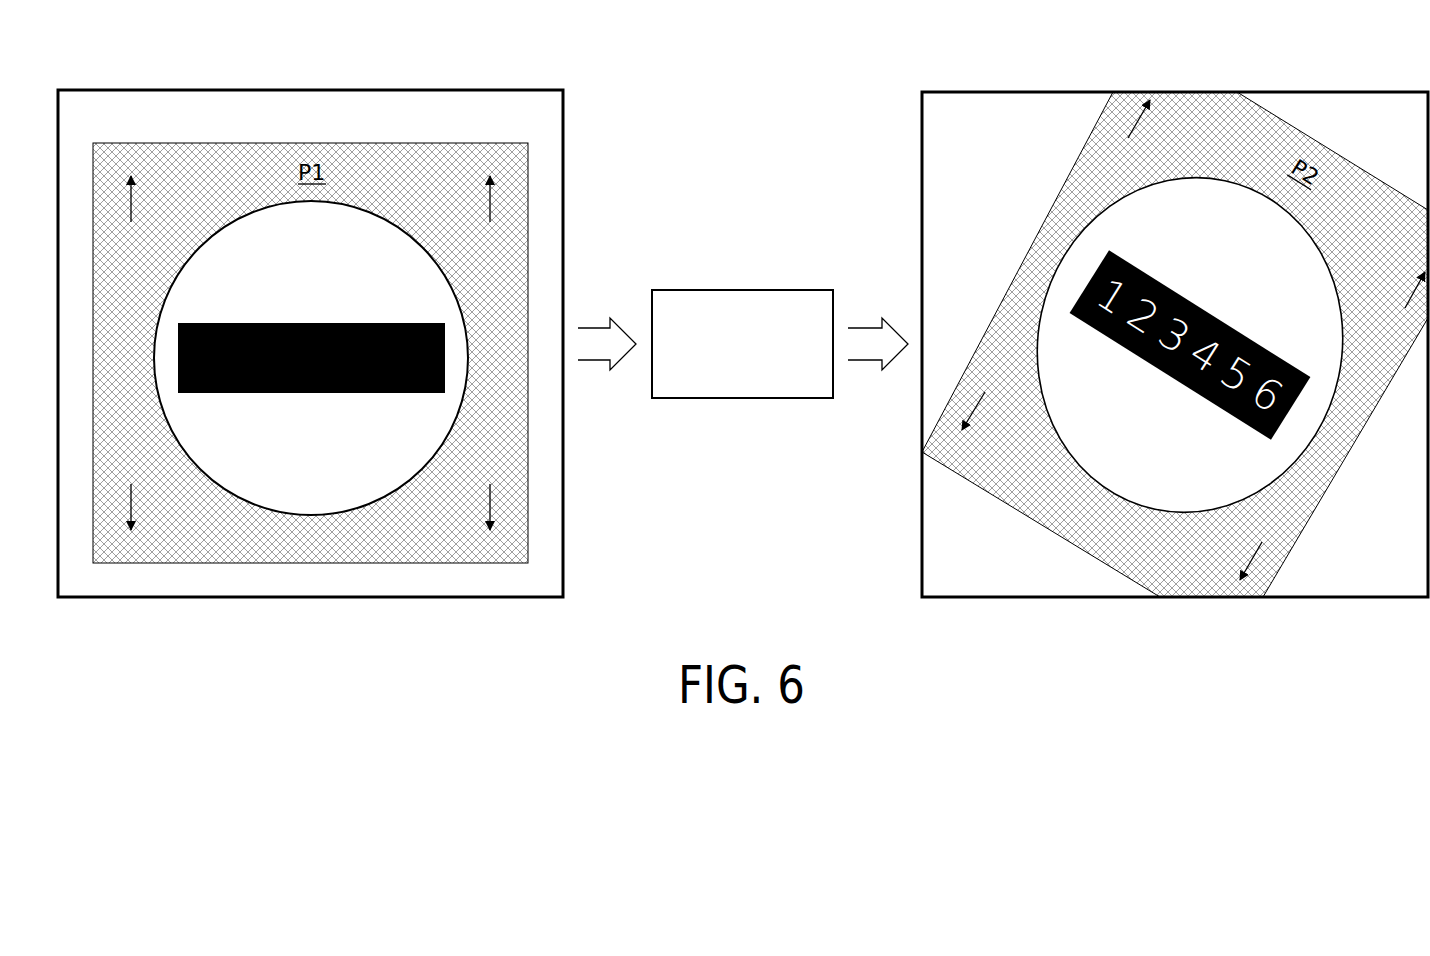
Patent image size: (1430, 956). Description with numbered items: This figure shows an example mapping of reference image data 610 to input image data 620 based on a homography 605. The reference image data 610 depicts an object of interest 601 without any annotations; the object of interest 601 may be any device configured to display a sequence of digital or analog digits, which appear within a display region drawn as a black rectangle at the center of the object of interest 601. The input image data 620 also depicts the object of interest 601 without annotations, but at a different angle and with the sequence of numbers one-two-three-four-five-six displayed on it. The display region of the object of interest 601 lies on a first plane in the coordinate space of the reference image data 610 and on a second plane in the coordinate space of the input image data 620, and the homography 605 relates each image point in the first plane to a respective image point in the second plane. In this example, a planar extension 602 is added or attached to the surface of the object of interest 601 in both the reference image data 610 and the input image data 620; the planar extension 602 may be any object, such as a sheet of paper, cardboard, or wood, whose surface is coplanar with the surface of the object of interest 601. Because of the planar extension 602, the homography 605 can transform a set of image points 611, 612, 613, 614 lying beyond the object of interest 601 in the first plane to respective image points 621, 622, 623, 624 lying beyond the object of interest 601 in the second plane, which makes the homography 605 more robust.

The reference image data 610 is at (137, 90).
The planar extension 602 is at (180, 143).
The object of interest 601 is at (362, 206).
The homography 605 is at (722, 370).
The input image data 620 is at (1003, 92).
The image point 611 is at (130, 213).
The image point 612 is at (490, 213).
The image point 613 is at (130, 494).
The image point 614 is at (490, 494).
The image point 621 is at (1121, 136).
The image point 622 is at (1397, 310).
The image point 623 is at (989, 393).
The image point 624 is at (1266, 543).